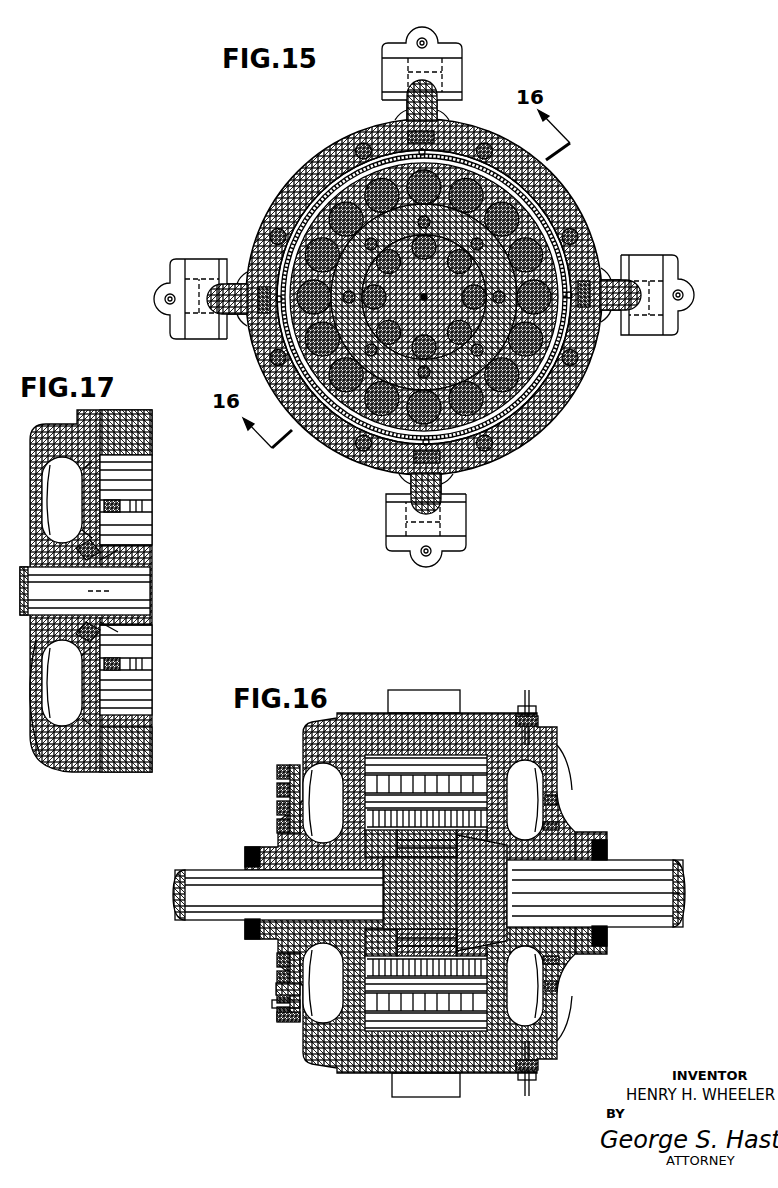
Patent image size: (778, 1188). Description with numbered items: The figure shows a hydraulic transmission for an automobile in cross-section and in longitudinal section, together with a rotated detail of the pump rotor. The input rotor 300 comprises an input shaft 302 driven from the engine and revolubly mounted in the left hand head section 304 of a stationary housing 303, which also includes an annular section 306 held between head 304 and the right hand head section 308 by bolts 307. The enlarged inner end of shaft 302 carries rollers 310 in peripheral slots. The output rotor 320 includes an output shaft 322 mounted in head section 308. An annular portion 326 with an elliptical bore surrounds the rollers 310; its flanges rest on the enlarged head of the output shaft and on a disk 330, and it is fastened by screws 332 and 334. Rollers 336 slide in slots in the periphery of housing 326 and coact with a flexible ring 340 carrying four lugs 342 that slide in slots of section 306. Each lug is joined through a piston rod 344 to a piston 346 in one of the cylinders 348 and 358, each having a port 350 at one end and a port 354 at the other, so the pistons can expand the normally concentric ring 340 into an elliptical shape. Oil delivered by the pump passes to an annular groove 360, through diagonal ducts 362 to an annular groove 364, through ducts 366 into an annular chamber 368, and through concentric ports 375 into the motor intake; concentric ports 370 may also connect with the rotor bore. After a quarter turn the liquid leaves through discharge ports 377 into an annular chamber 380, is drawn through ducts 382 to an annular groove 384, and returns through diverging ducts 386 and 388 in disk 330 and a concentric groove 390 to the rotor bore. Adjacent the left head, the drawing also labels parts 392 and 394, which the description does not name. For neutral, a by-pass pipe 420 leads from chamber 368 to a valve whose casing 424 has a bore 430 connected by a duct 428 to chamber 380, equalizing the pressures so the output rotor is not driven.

In FIG. 17, the input rotor 300 is at (158, 591).
In FIG. 16, the input rotor 300 is at (233, 866).
In FIG. 17, the input shaft 302 is at (120, 598).
In FIG. 16, the input shaft 302 is at (212, 906).
In FIG. 16, the stationary housing 303 is at (338, 1076).
In FIG. 17, the left hand head section 304 is at (96, 414).
In FIG. 16, the left hand head section 304 is at (322, 762).
In FIG. 15, the annular section 306 is at (289, 202).
In FIG. 17, the annular section 306 is at (130, 430).
In FIG. 16, the annular section 306 is at (475, 725).
In FIG. 15, the bolts 307 is at (575, 235).
In FIG. 16, the right hand head section 308 is at (560, 772).
In FIG. 15, the rollers 310 is at (392, 258).
In FIG. 17, the rollers 310 is at (150, 553).
In FIG. 16, the rollers 310 is at (385, 800).
In FIG. 16, the output rotor 320 is at (668, 850).
In FIG. 16, the output shaft 322 is at (690, 880).
In FIG. 15, the annular portion 326 is at (512, 207).
In FIG. 17, the annular portion 326 is at (150, 502).
In FIG. 16, the annular portion 326 is at (392, 768).
In FIG. 17, the disk 330 is at (150, 530).
In FIG. 16, the disk 330 is at (400, 796).
In FIG. 15, the screws 332 is at (337, 265).
In FIG. 16, the screws 332 is at (470, 745).
In FIG. 17, the screws 334 is at (150, 522).
In FIG. 16, the screws 334 is at (395, 790).
In FIG. 15, the rollers 336 is at (352, 290).
In FIG. 17, the rollers 336 is at (150, 480).
In FIG. 16, the rollers 336 is at (420, 770).
In FIG. 15, the ring 340 is at (478, 185).
In FIG. 17, the ring 340 is at (150, 452).
In FIG. 16, the ring 340 is at (505, 740).
In FIG. 15, the lugs 342 is at (358, 148).
In FIG. 15, the piston rod 344 is at (408, 137).
In FIG. 15, the piston 346 is at (413, 82).
In FIG. 15, the cylinders 348 is at (462, 56).
In FIG. 16, the cylinders 348 is at (446, 690).
In FIG. 15, the port 350 is at (427, 38).
In FIG. 15, the port 354 is at (406, 112).
In FIG. 15, the cylinders 358 is at (180, 313).
In FIG. 15, the annular groove 360 is at (325, 198).
In FIG. 16, the annular groove 360 is at (512, 735).
In FIG. 15, the ducts 362 is at (545, 225).
In FIG. 16, the ducts 362 is at (512, 872).
In FIG. 16, the annular groove 364 is at (566, 804).
In FIG. 16, the ducts 366 is at (560, 828).
In FIG. 16, the annular chamber 368 is at (547, 784).
In FIG. 15, the concentric ports 370 is at (444, 125).
In FIG. 16, the concentric ports 370 is at (532, 792).
In FIG. 15, the concentric ports 375 is at (438, 128).
In FIG. 16, the concentric ports 375 is at (530, 700).
In FIG. 17, the discharge ports 377 is at (115, 476).
In FIG. 17, the annular chamber 380 is at (57, 480).
In FIG. 16, the annular chamber 380 is at (325, 748).
In FIG. 17, the ducts 382 is at (72, 645).
In FIG. 16, the ducts 382 is at (297, 842).
In FIG. 17, the annular groove 384 is at (95, 515).
In FIG. 16, the annular groove 384 is at (348, 830).
In FIG. 17, the diverging ducts 386 is at (120, 560).
In FIG. 17, the diverging ducts 388 is at (150, 542).
In FIG. 17, the concentric groove 390 is at (150, 563).
In FIG. 17, the snap ring 392 is at (92, 496).
In FIG. 16, the snap ring 392 is at (278, 796).
In FIG. 16, the retainer 394 is at (278, 770).
In FIG. 16, the by-pass pipe 420 is at (536, 1090).
In FIG. 16, the casing 424 is at (290, 1020).
In FIG. 17, the duct 428 is at (28, 700).
In FIG. 16, the duct 428 is at (280, 990).
In FIG. 16, the bore 430 is at (280, 1005).